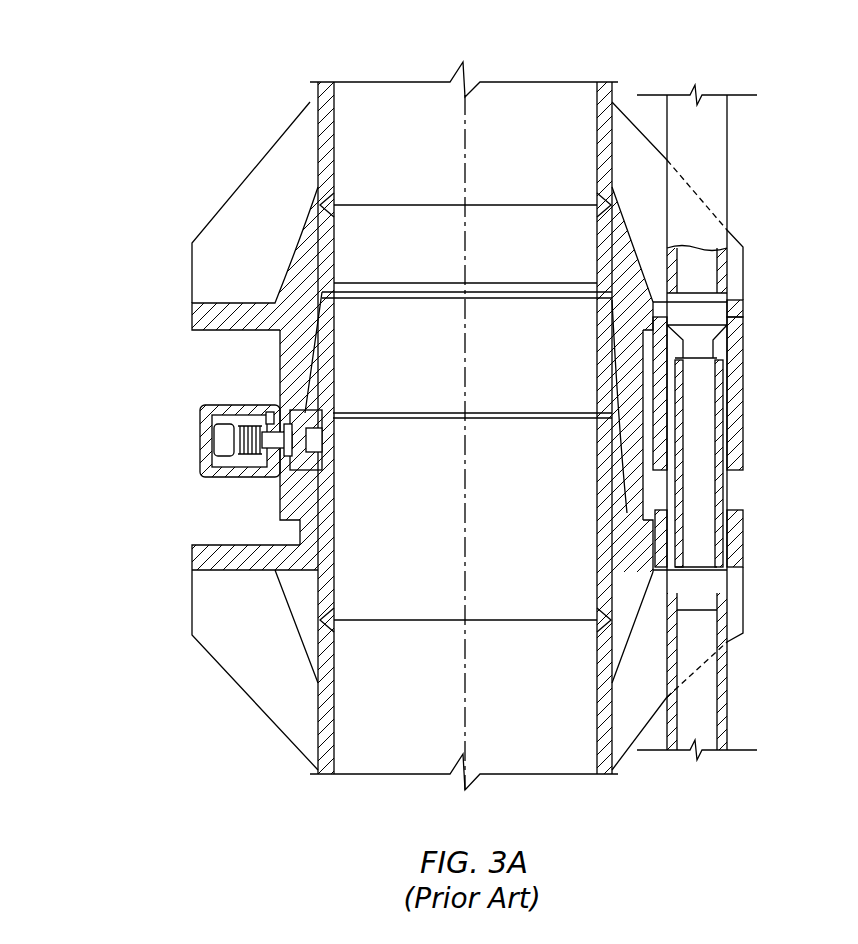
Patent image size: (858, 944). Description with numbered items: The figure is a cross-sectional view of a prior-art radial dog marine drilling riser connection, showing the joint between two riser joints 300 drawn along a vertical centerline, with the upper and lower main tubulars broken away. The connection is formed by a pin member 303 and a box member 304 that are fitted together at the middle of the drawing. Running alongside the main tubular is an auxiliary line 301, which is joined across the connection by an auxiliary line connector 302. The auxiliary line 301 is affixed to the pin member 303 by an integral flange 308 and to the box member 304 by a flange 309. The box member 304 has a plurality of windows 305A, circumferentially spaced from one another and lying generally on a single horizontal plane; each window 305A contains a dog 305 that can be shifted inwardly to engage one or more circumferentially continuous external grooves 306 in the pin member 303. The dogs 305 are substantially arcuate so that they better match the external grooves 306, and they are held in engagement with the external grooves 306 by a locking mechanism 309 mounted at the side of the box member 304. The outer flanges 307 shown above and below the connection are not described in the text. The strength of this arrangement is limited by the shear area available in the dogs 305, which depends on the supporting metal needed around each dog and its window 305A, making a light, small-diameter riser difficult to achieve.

The riser joint 300 is at (326, 96).
The auxiliary line 301 is at (726, 146).
The auxiliary line connector 302 is at (742, 405).
The pin member 303 is at (318, 540).
The box member 304 is at (290, 362).
The dog 305 is at (300, 470).
The window 305A is at (270, 423).
The external groove 306 is at (318, 438).
The upper flange 307 is at (195, 318).
The integral flange 308 is at (195, 560).
The locking mechanism 309 is at (210, 440).